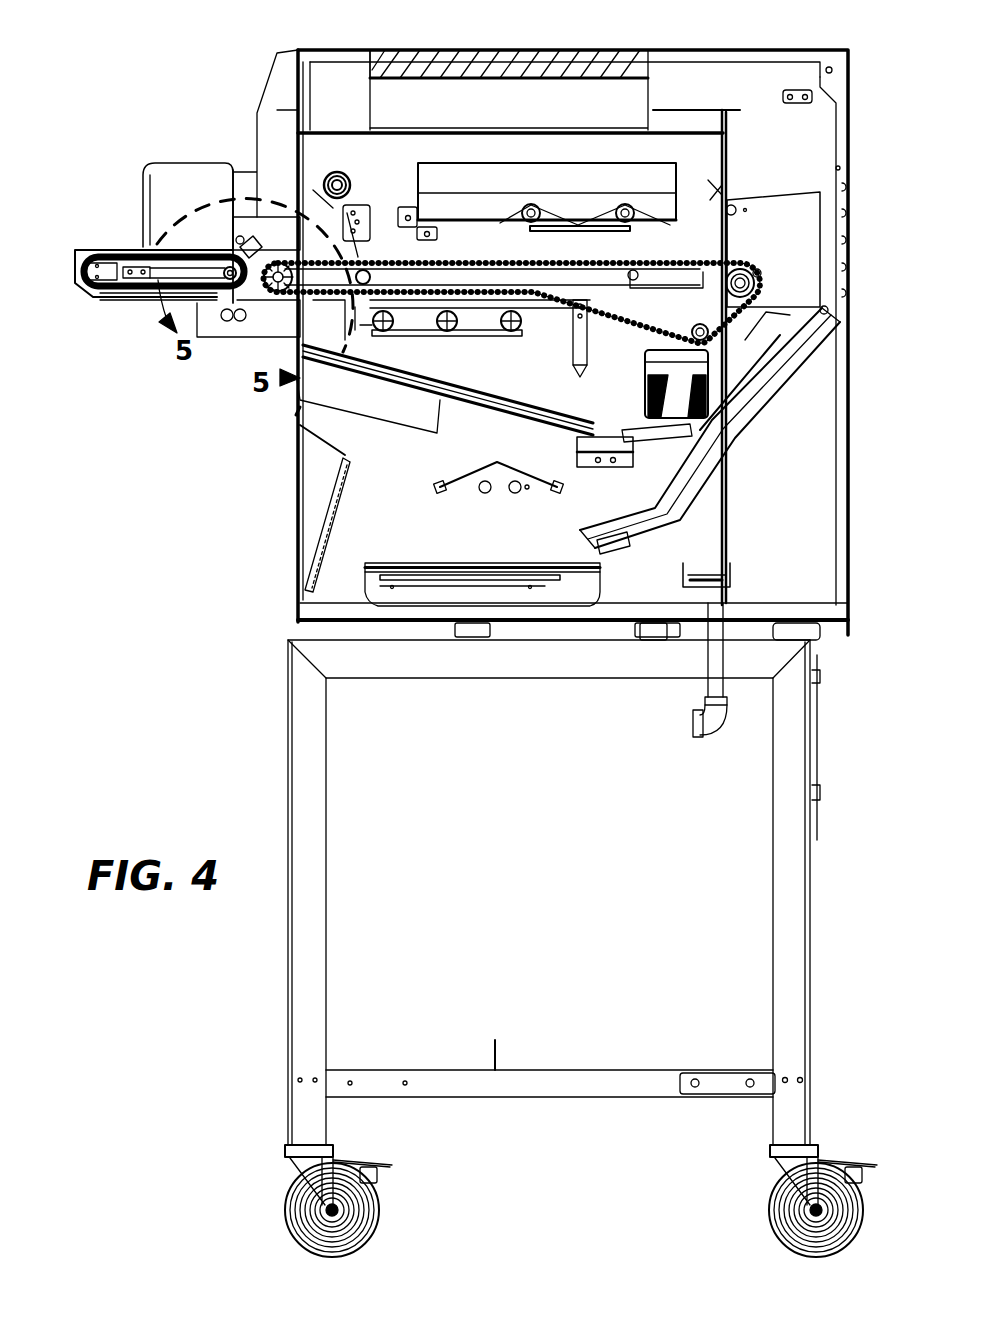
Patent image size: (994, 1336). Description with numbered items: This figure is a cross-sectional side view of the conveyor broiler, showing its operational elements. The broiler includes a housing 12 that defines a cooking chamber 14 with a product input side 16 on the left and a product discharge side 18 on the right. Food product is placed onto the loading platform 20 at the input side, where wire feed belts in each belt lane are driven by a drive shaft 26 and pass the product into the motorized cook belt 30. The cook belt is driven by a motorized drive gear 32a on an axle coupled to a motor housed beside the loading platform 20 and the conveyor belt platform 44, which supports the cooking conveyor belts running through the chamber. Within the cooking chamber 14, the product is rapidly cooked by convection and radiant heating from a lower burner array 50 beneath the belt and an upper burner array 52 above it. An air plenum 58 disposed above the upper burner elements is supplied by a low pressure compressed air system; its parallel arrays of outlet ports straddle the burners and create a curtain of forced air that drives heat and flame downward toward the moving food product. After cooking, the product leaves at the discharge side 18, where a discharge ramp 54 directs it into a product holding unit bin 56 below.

The housing 12 is at (748, 50).
The cooking chamber 14 is at (693, 213).
The product input side 16 is at (142, 240).
The product discharge side 18 is at (862, 297).
The loading platform 20 is at (95, 248).
The drive shaft 26 is at (223, 275).
The cooking conveyor belt (cook belt) 30 is at (395, 250).
The motorized drive gear 32a is at (278, 262).
The conveyor belt platform 44 is at (603, 267).
The lower burner array 50 is at (407, 327).
The upper burner array 52 is at (537, 201).
The discharge ramp 54 is at (763, 370).
The product holding unit bin 56 is at (427, 563).
The air plenum 58 is at (652, 110).